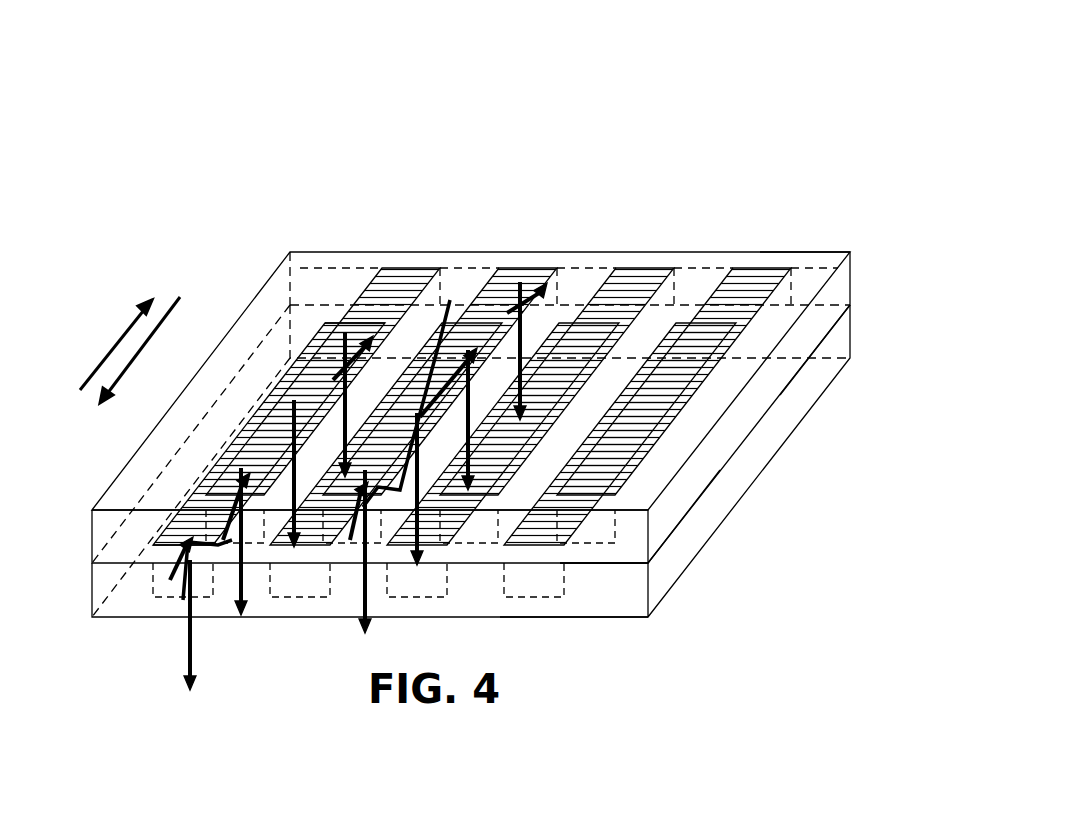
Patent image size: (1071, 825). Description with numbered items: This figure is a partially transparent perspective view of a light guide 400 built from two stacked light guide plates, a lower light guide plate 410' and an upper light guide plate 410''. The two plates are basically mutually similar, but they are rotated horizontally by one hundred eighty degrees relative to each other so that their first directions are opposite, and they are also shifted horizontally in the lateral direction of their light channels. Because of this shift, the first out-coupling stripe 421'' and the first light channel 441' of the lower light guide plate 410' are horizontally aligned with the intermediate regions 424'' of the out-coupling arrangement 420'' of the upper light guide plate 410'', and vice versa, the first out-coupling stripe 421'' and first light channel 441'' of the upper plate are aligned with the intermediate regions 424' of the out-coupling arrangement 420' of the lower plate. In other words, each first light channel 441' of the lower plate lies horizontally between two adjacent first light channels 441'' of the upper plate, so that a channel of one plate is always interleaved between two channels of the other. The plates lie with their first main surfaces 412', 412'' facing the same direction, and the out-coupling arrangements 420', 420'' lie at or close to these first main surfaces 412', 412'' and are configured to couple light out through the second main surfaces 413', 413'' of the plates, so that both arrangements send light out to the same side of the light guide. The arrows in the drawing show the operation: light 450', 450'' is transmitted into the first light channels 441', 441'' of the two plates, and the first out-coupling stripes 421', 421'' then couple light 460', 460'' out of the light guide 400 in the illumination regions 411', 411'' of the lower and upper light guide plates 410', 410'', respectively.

The light guide 400 is at (220, 140).
The lower light guide plate 410' is at (502, 431).
The upper light guide plate 410'' is at (508, 416).
The illumination region of the lower light guide plate 411' is at (680, 537).
The illumination region of the upper light guide plate 411'' is at (454, 534).
The first main surface of the lower light guide plate 412' is at (788, 273).
The first main surface of the upper light guide plate 412'' is at (766, 229).
The second main surface of the lower light guide plate 413' is at (601, 664).
The second main surface of the upper light guide plate 413'' is at (658, 613).
The out-coupling arrangement of the lower light guide plate 420' is at (375, 445).
The out-coupling arrangement of the upper light guide plate 420'' is at (519, 334).
The first out-coupling stripe of the lower light guide plate 421' is at (200, 434).
The first out-coupling stripe of the upper light guide plate 421'' is at (323, 310).
The intermediate region of the lower light guide plate 424' is at (228, 628).
The intermediate region of the upper light guide plate 424'' is at (292, 268).
The first light channel of the lower light guide plate 441' is at (173, 613).
The first light channel of the upper light guide plate 441'' is at (420, 332).
The light transmitted to the first light channel of the lower light guide plate 450' is at (141, 594).
The light transmitted to the first light channel of the upper light guide plate 450'' is at (407, 477).
The light coupled out of the lower light guide plate 460' is at (242, 575).
The light coupled out of the upper light guide plate 460'' is at (432, 476).